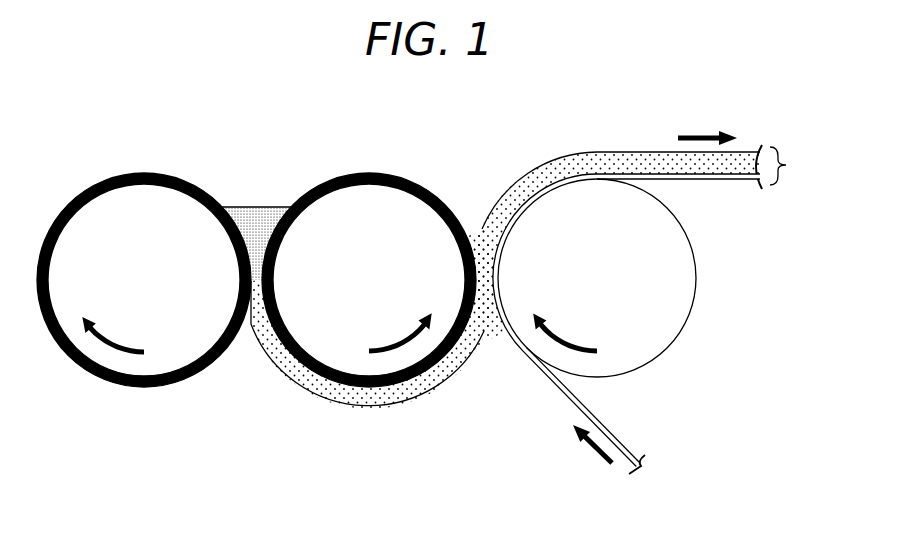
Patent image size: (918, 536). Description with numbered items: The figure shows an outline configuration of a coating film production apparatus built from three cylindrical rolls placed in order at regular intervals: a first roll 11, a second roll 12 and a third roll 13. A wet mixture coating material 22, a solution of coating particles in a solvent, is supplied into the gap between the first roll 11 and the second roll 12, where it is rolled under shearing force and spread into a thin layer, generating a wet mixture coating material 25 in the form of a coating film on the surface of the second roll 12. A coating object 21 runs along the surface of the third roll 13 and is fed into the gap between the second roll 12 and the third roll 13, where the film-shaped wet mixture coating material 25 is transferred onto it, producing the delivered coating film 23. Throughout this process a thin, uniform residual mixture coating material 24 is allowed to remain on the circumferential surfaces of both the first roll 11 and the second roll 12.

The first roll 11 is at (87, 227).
The second roll 12 is at (428, 222).
The third roll 13 is at (652, 340).
The coating object 21 is at (567, 403).
The wet mixture coating material 22 is at (257, 222).
The coating film 23 is at (645, 236).
The residual mixture coating material 24 is at (372, 177).
The wet mixture coating material in the form of a coating film 25 is at (371, 406).